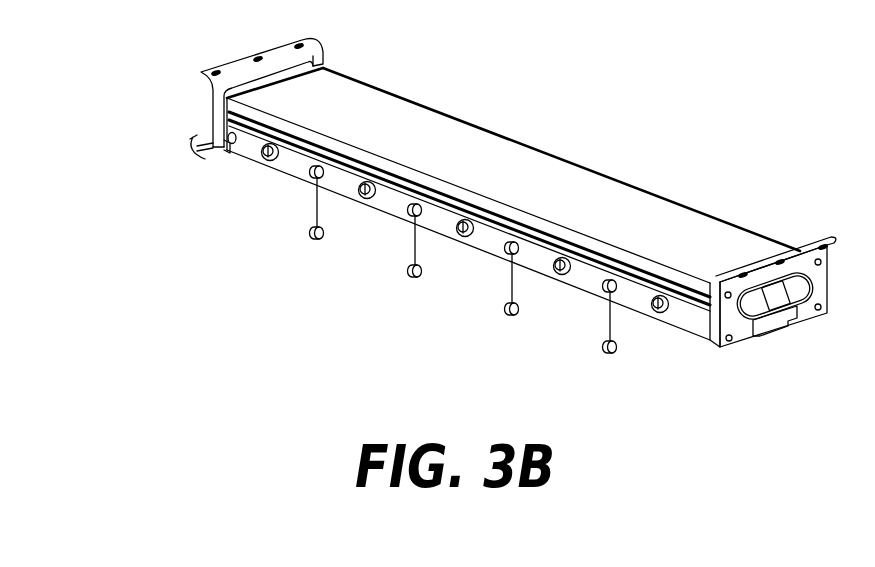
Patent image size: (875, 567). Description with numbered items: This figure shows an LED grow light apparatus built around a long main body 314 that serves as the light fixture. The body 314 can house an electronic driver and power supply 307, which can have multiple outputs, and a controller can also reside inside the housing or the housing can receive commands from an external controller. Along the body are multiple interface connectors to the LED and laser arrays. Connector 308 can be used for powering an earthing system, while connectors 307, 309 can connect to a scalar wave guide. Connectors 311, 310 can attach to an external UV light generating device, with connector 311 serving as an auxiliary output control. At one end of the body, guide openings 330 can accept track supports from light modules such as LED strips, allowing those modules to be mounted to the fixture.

The electronic driver and power supply 307 is at (260, 158).
The connector 308 is at (310, 173).
The connector 309 is at (408, 211).
The connector 310 is at (505, 249).
The connector 311 is at (603, 288).
The body 314 is at (738, 220).
The guide opening 330 is at (790, 320).